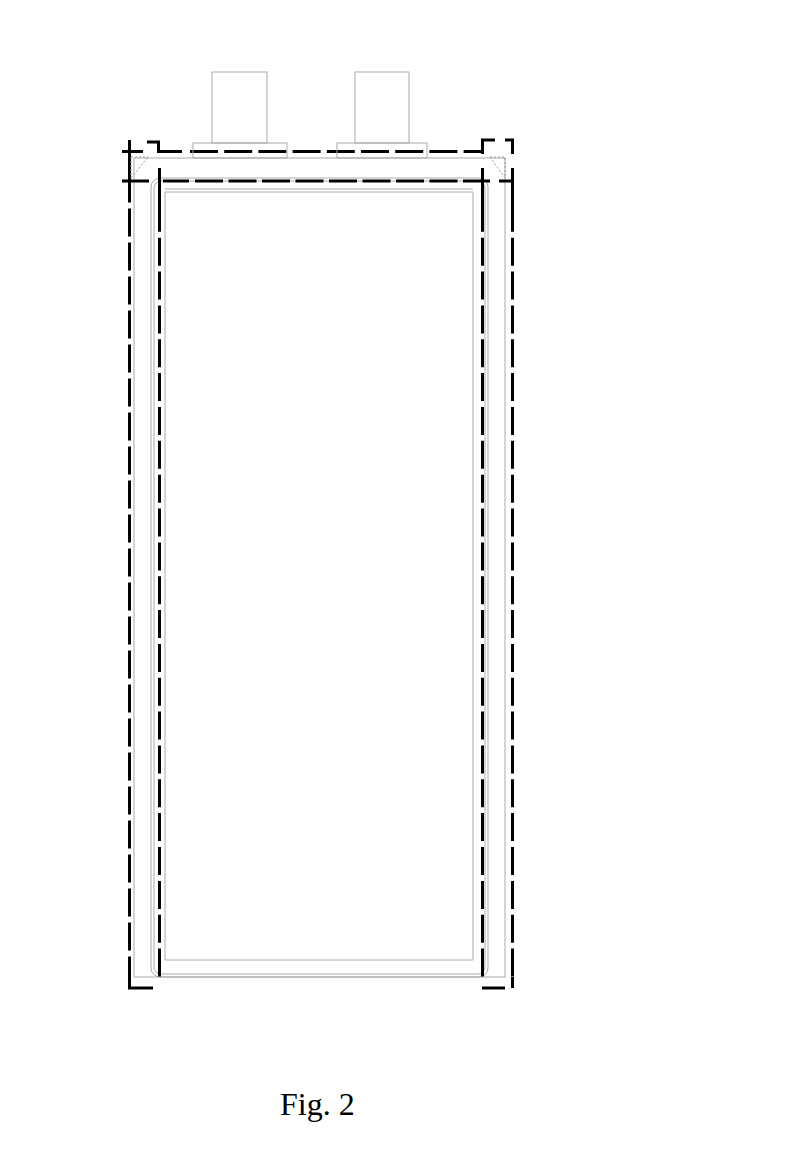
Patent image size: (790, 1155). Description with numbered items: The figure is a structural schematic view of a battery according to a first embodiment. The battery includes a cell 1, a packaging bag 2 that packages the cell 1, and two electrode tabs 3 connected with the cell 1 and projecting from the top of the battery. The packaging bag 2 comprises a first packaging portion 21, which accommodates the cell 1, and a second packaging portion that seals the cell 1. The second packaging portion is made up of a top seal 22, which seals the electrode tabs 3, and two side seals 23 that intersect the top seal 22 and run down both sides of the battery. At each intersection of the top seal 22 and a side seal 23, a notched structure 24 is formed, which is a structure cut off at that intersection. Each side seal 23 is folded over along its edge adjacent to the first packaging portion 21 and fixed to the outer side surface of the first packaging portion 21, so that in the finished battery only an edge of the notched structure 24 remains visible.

The cell 1 is at (193, 482).
The packaging bag 2 is at (440, 687).
The first packaging portion 21 is at (440, 482).
The top seal 22 is at (175, 140).
The side seal 23 is at (144, 982).
The notched structure 24 is at (509, 167).
The electrode tab 3 is at (383, 97).